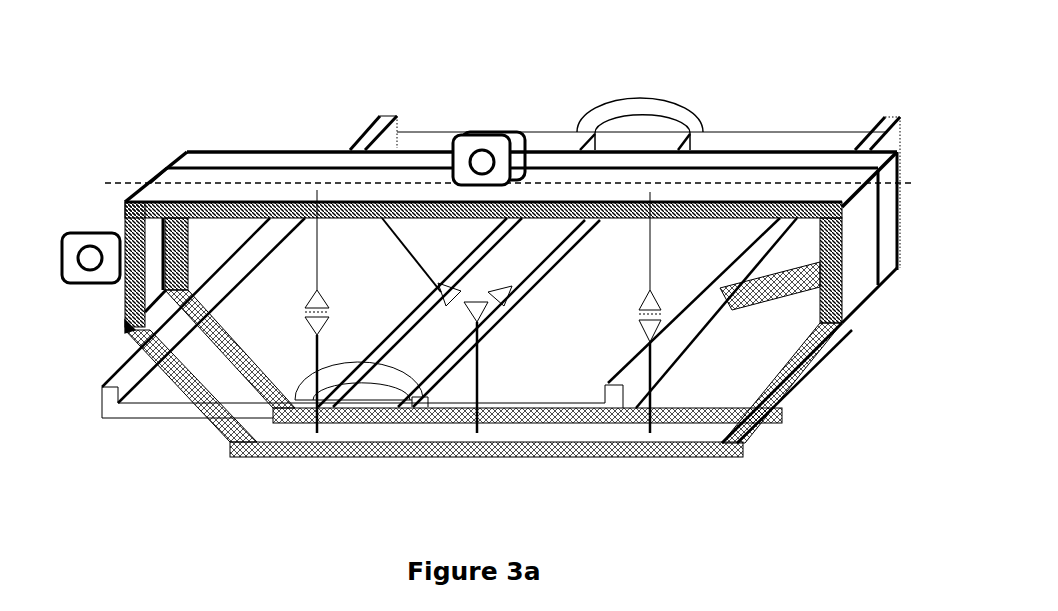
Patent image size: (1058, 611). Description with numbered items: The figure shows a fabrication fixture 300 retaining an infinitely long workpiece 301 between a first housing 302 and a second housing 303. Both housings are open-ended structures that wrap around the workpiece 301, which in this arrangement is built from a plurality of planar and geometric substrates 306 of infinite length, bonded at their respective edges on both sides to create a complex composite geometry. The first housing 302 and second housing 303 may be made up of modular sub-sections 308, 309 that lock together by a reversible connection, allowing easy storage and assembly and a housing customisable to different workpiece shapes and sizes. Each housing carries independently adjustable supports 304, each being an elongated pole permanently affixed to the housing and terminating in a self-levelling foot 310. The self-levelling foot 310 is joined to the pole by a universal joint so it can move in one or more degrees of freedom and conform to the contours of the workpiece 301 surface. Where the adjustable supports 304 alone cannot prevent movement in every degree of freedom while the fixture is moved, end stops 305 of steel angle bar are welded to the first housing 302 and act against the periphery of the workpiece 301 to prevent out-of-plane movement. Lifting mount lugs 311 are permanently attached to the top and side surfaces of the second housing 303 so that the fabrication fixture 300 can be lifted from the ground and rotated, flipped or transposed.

The fabrication fixture 300 is at (452, 92).
The workpiece 301 is at (497, 402).
The first housing 302 is at (153, 184).
The second housing 303 is at (712, 458).
The independently adjustable support 304 is at (650, 374).
The end stop 305 is at (768, 298).
The planar and geometric substrates 306 is at (760, 132).
The modular sub-section 308 is at (889, 215).
The modular sub-section 309 is at (865, 268).
The self-levelling foot 310 is at (512, 291).
The lifting mount lug 311 is at (484, 132).